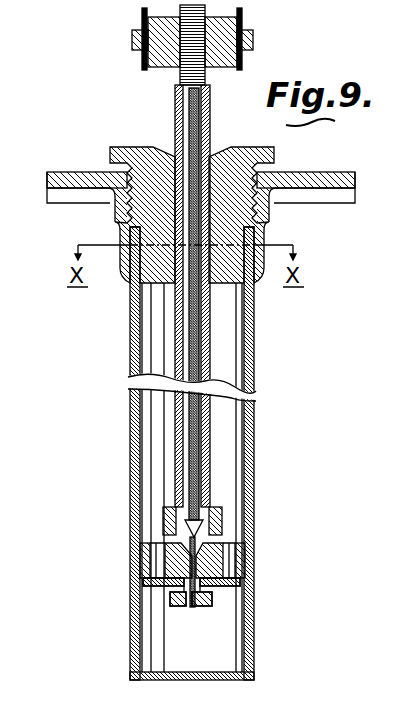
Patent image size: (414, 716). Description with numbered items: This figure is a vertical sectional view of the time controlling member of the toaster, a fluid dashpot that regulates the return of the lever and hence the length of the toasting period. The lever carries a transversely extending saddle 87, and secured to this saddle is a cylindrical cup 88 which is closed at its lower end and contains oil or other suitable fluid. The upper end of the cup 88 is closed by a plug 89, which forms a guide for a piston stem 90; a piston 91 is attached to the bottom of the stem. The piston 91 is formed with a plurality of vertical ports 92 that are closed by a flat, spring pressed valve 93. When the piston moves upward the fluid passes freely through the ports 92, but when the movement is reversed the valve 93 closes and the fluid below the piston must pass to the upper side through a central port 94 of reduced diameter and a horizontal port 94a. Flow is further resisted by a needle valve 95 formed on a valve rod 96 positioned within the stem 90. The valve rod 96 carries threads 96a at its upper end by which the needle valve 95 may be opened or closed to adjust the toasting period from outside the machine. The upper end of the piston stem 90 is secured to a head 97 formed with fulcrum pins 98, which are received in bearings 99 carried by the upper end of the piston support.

The saddle 87 is at (315, 172).
The cylindrical cup 88 is at (253, 428).
The plug 89 is at (132, 147).
The piston stem 90 is at (207, 327).
The piston 91 is at (243, 565).
The vertical ports 92 is at (230, 552).
The valve 93 is at (227, 593).
The central port 94 is at (192, 606).
The horizontal port 94a is at (220, 533).
The needle valve 95 is at (222, 508).
The valve rod 96 is at (195, 360).
The threads 96a is at (202, 78).
The head 97 is at (224, 40).
The fulcrum pins 98 is at (133, 42).
The bearings 99 is at (142, 21).